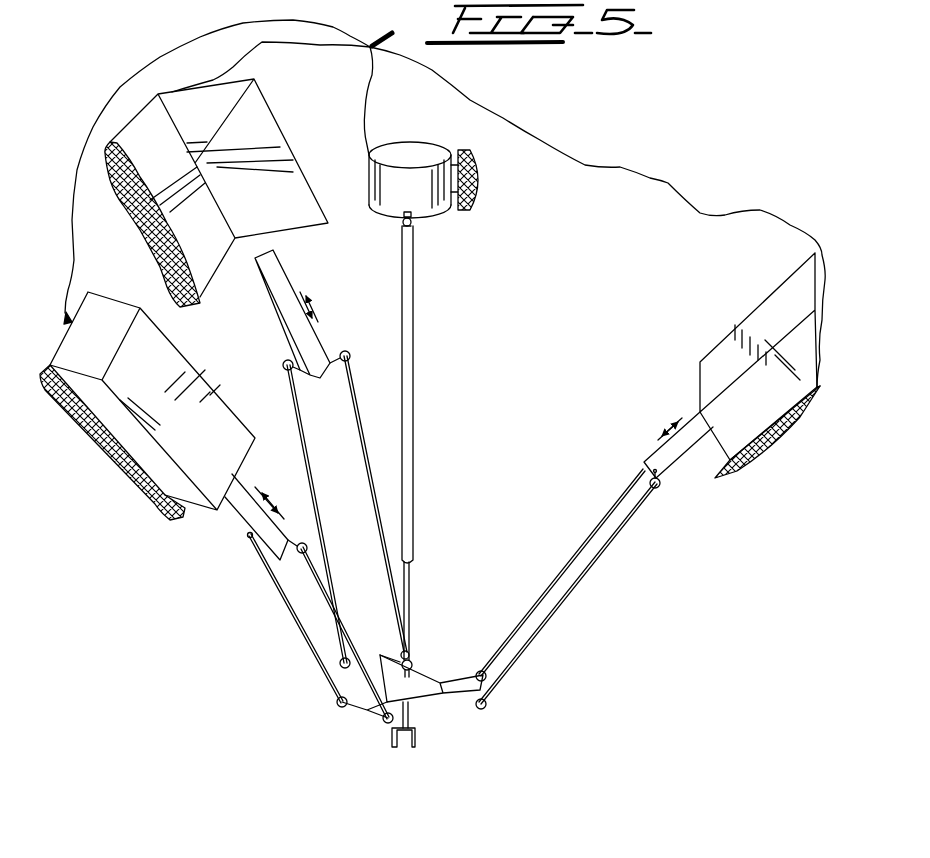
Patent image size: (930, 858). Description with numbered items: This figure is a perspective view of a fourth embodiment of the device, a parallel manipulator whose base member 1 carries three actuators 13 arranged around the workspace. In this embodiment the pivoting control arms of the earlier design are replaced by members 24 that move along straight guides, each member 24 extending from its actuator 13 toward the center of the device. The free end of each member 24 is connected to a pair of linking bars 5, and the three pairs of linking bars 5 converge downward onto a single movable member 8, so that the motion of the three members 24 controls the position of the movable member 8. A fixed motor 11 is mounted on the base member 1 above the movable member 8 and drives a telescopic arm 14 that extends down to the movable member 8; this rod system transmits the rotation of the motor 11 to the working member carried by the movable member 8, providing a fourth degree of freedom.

The base member 1 is at (147, 233).
The linking bars 5 is at (578, 601).
The movable member 8 is at (423, 693).
The fixed motor 11 is at (428, 197).
The rotary actuators 13 is at (293, 118).
The telescopic arm 14 is at (409, 350).
The members moving on straight guides 24 is at (278, 313).